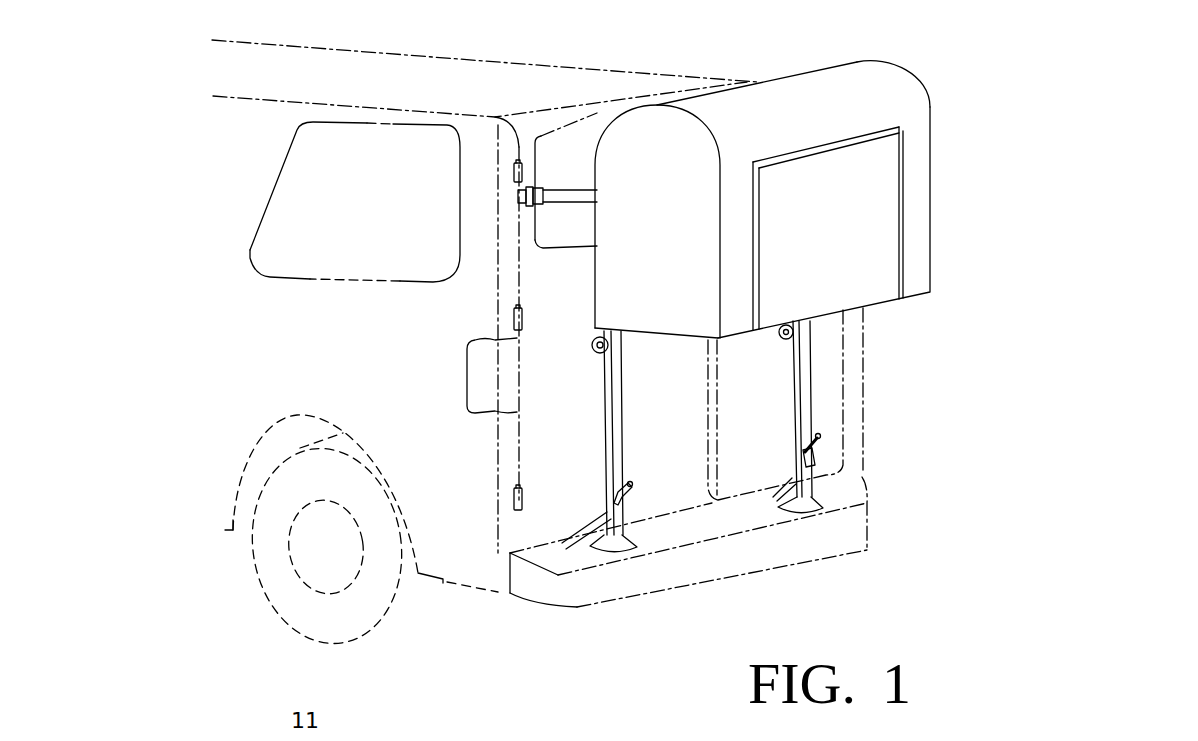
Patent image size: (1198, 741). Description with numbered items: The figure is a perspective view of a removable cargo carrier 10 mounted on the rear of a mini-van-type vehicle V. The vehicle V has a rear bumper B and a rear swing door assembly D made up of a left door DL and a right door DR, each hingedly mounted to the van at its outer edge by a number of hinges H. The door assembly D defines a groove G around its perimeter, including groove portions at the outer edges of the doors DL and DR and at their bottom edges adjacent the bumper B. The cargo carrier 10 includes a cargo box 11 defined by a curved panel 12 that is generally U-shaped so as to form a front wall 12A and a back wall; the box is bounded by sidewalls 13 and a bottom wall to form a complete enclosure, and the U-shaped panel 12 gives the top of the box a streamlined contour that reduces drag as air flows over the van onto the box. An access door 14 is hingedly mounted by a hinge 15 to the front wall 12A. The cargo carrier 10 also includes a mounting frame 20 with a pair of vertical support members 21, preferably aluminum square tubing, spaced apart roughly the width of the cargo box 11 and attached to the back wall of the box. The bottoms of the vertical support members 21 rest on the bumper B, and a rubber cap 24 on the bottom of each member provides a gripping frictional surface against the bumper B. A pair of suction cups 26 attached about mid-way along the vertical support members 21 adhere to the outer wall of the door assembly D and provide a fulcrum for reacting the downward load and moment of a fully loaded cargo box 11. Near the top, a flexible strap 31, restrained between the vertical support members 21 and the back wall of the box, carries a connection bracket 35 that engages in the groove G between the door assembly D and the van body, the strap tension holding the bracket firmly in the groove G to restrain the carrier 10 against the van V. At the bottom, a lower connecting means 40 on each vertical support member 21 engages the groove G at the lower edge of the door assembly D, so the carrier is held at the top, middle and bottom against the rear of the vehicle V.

The removable cargo carrier 10 is at (801, 169).
The cargo box 11 is at (932, 101).
The curved panel 12 is at (832, 198).
The front wall 12A is at (784, 137).
The sidewalls 13 is at (668, 234).
The access door 14 is at (828, 171).
The hinge 15 is at (862, 133).
The mounting frame 20 is at (754, 493).
The vertical support members 21 is at (804, 403).
The cap 24 is at (611, 548).
The suction cups 26 is at (596, 357).
The flexible strap 31 is at (548, 203).
The connection bracket 35 is at (517, 199).
The lower connecting means 40 is at (640, 464).
The vehicle V is at (431, 50).
The rear swing door assembly D is at (580, 114).
The hinges H is at (500, 168).
The left door DL is at (675, 370).
The right door DR is at (771, 361).
The rear bumper B is at (716, 558).
The groove G is at (497, 553).